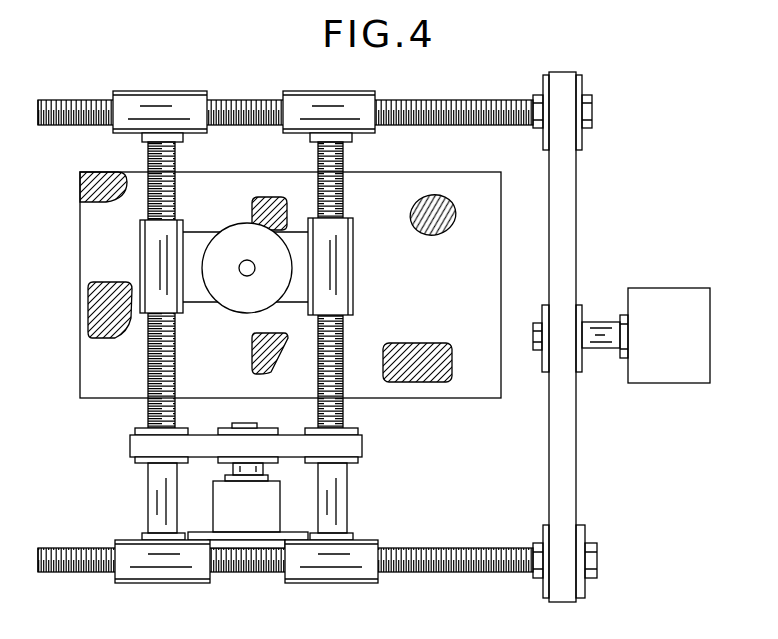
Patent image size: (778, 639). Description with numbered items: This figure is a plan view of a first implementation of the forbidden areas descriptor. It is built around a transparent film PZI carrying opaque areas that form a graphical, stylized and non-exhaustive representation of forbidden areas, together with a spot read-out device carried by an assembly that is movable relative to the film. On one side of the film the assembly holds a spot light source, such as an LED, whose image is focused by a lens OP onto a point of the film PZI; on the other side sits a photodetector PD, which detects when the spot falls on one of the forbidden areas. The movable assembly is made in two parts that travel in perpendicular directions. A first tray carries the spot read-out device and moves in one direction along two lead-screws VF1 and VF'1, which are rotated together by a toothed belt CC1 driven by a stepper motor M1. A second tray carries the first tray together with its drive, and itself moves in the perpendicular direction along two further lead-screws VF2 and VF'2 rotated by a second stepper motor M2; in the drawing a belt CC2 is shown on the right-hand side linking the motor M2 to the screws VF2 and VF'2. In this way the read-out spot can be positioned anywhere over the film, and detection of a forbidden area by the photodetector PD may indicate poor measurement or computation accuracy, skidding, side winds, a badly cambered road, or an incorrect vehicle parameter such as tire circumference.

The lead-screw VF1 is at (160, 153).
The lead-screw VF'1 is at (374, 280).
The lead-screw VF2 is at (467, 553).
The lead-screw VF'2 is at (285, 85).
The toothed belt CC1 is at (163, 446).
The drive belt / second carriage CC2 is at (571, 205).
The stepper motor M1 is at (263, 507).
The stepper motor M2 is at (645, 305).
The lens OP is at (227, 237).
The photodetector PD is at (244, 275).
The transparent film PZI is at (480, 370).